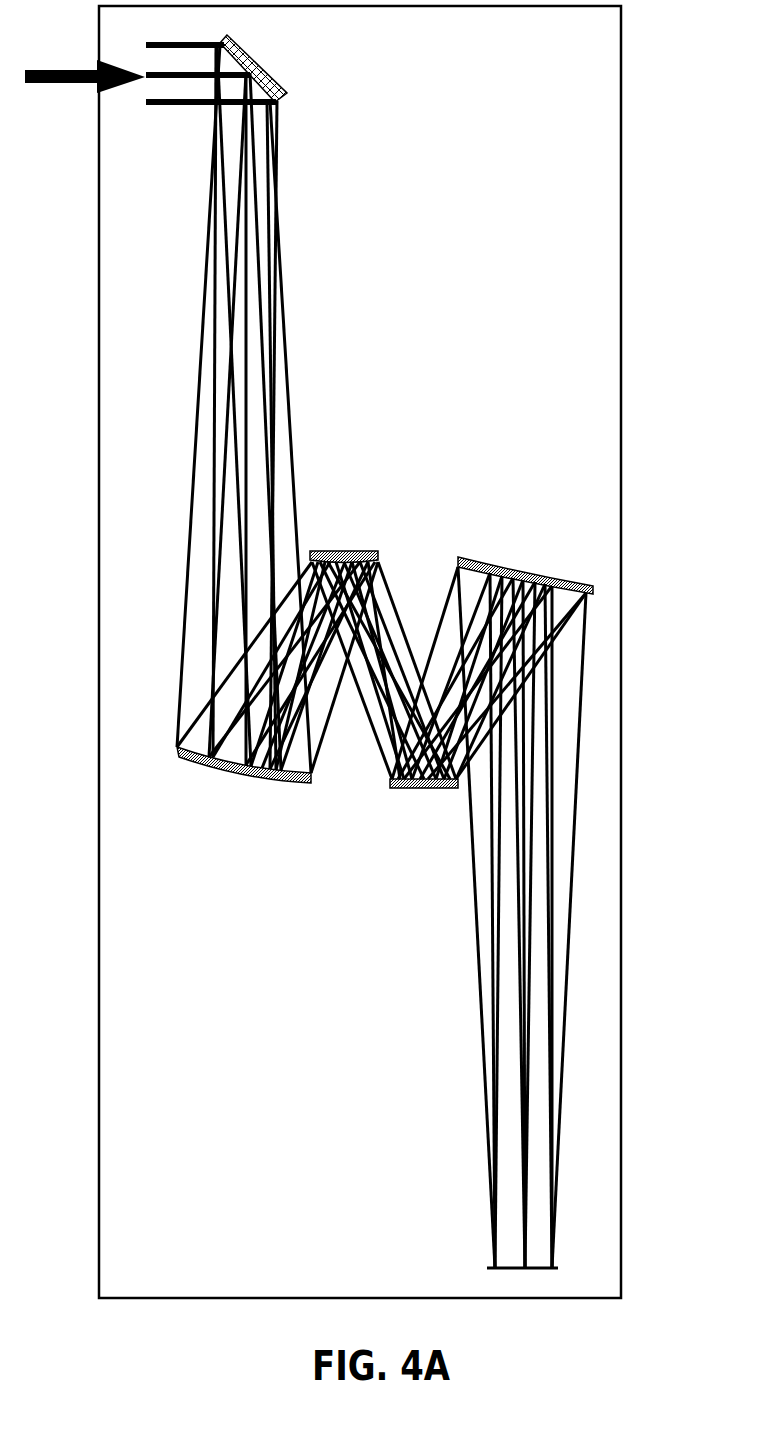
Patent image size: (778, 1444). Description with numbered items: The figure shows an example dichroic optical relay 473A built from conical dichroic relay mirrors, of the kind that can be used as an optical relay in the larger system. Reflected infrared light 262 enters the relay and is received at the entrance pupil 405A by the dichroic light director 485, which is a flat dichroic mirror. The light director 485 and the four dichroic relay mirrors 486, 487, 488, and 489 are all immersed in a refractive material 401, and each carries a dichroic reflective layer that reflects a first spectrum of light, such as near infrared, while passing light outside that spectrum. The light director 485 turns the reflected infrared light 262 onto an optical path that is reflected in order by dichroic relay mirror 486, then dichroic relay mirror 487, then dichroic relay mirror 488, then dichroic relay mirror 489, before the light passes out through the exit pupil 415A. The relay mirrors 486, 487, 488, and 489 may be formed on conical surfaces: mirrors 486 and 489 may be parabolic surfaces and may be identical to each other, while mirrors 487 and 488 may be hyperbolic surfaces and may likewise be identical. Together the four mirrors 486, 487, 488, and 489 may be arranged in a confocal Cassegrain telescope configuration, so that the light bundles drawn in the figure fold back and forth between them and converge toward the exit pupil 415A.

The reflected infrared light 262 is at (150, 72).
The refractive material 401 is at (158, 308).
The entrance pupil 405A is at (287, 65).
The exit pupil 415A is at (470, 1268).
The dichroic optical relay 473A is at (621, 185).
The dichroic light director 485 is at (247, 55).
The dichroic relay mirror 486 is at (255, 775).
The dichroic relay mirror 487 is at (353, 552).
The dichroic relay mirror 488 is at (410, 788).
The dichroic relay mirror 489 is at (541, 576).